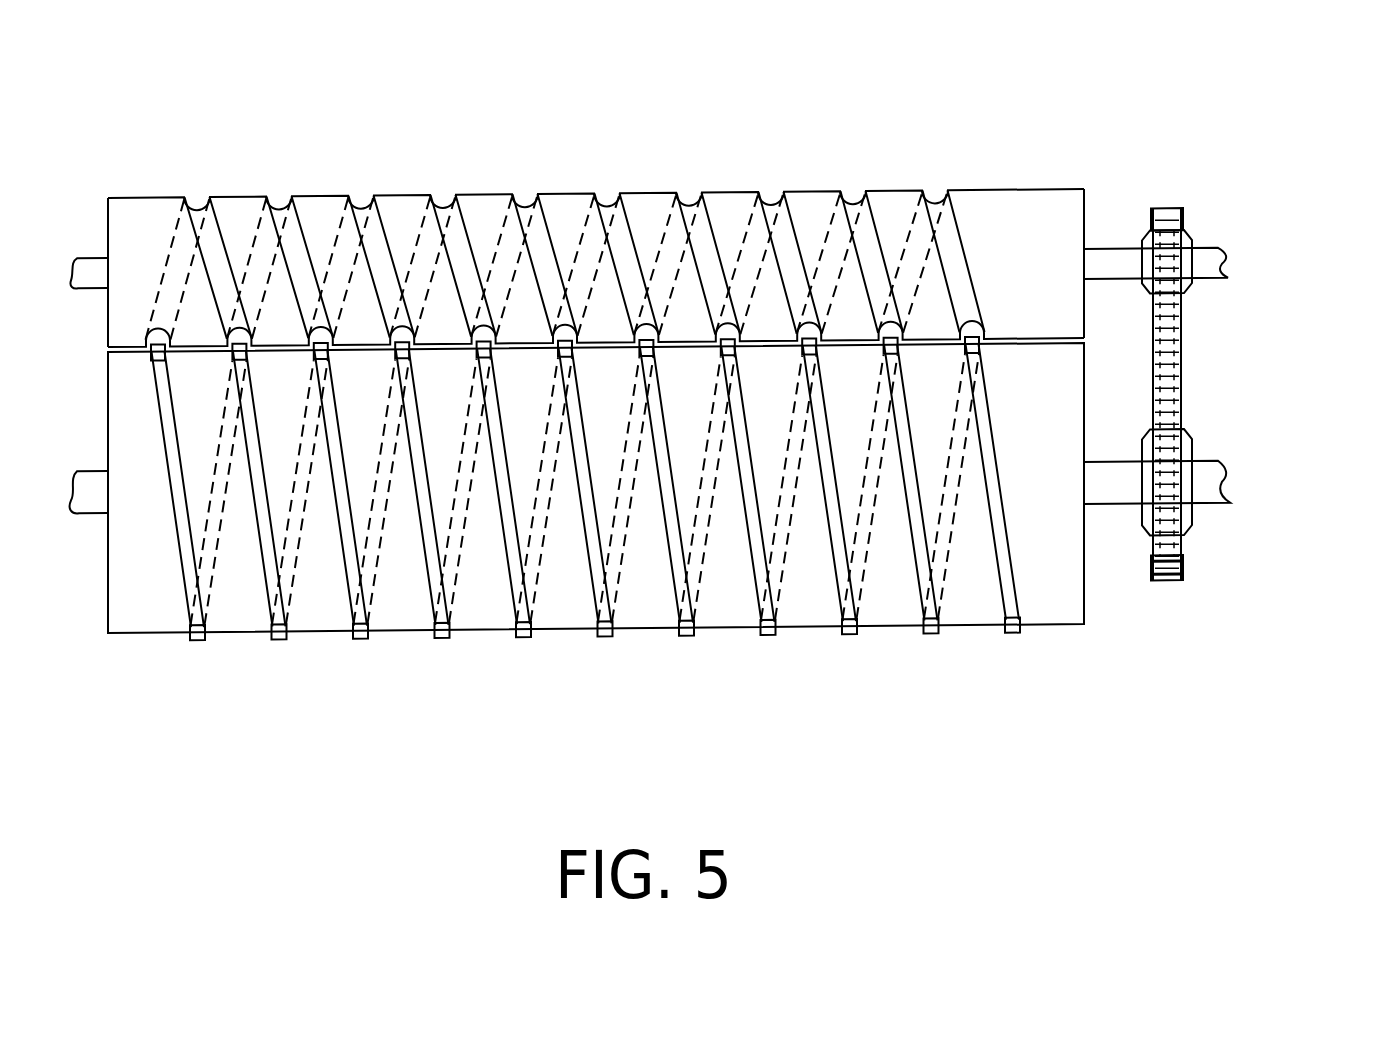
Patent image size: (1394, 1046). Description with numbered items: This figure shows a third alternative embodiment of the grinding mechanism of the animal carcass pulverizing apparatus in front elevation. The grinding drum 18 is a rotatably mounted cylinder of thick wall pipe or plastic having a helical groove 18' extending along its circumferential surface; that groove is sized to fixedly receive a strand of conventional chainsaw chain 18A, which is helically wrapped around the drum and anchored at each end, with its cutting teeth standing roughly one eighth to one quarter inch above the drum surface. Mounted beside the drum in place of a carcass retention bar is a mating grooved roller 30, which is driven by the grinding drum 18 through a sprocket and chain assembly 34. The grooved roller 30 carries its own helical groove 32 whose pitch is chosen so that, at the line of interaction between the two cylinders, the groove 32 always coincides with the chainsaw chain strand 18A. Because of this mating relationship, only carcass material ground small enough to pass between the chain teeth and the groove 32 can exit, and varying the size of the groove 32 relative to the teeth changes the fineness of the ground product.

The grinding drum 18 is at (744, 200).
The helical groove 18' is at (382, 543).
The chainsaw chain strand 18A is at (935, 632).
The grooved roller 30 is at (1002, 150).
The helical groove 32 is at (207, 206).
The sprocket and chain assembly 34 is at (1183, 372).